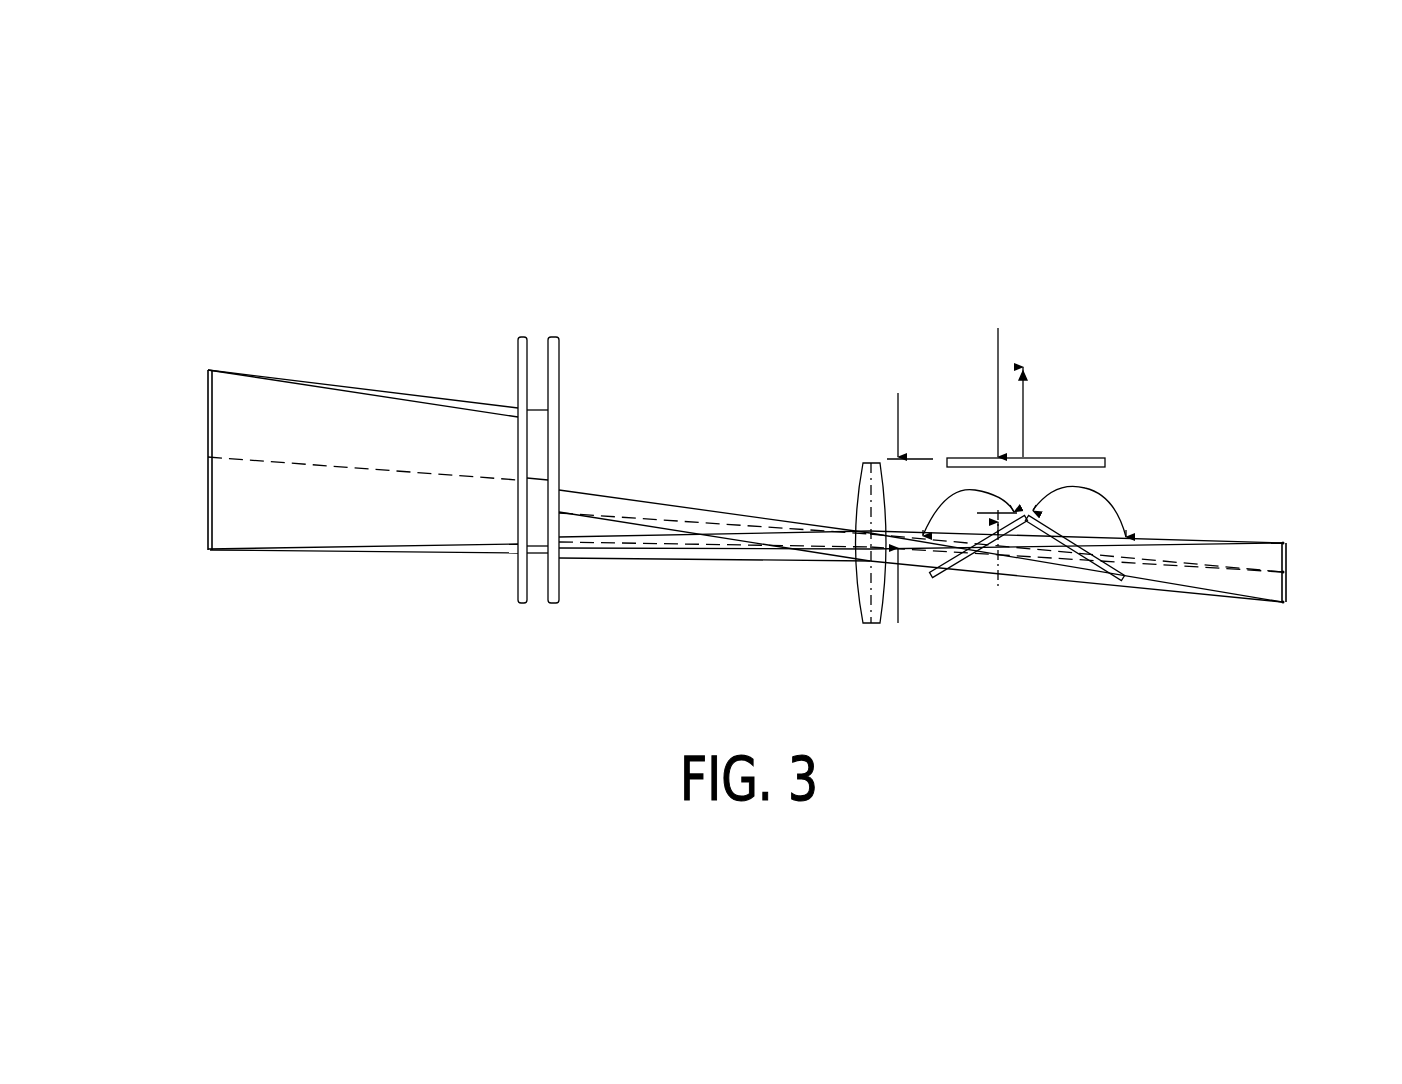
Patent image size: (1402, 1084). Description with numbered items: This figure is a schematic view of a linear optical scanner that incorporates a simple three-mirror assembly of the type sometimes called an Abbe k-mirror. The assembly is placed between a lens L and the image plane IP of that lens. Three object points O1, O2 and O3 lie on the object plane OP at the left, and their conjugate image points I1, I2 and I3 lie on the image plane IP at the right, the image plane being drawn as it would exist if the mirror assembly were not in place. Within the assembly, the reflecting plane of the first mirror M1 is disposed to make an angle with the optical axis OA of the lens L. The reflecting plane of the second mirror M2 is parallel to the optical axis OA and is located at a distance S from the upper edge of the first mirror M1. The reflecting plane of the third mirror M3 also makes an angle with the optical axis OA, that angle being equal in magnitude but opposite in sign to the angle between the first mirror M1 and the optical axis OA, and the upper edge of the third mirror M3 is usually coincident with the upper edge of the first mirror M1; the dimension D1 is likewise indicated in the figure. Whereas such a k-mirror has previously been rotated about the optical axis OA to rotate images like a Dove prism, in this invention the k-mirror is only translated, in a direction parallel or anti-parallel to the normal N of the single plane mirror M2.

The object plane OP is at (208, 512).
The object point O1 is at (208, 551).
The object point O2 is at (208, 457).
The object point O3 is at (210, 370).
The lens L is at (853, 595).
The distance between optical axis and mirror M2 D1 is at (898, 415).
The distance S is at (998, 370).
The normal N is at (1023, 400).
The first mirror M1 is at (940, 577).
The second mirror M2 is at (1097, 457).
The third mirror M3 is at (1084, 578).
The optical axis OA is at (1148, 538).
The image plane IP is at (1286, 585).
The image point I1 is at (1284, 543).
The image point I2 is at (1286, 572).
The image point I3 is at (1286, 603).